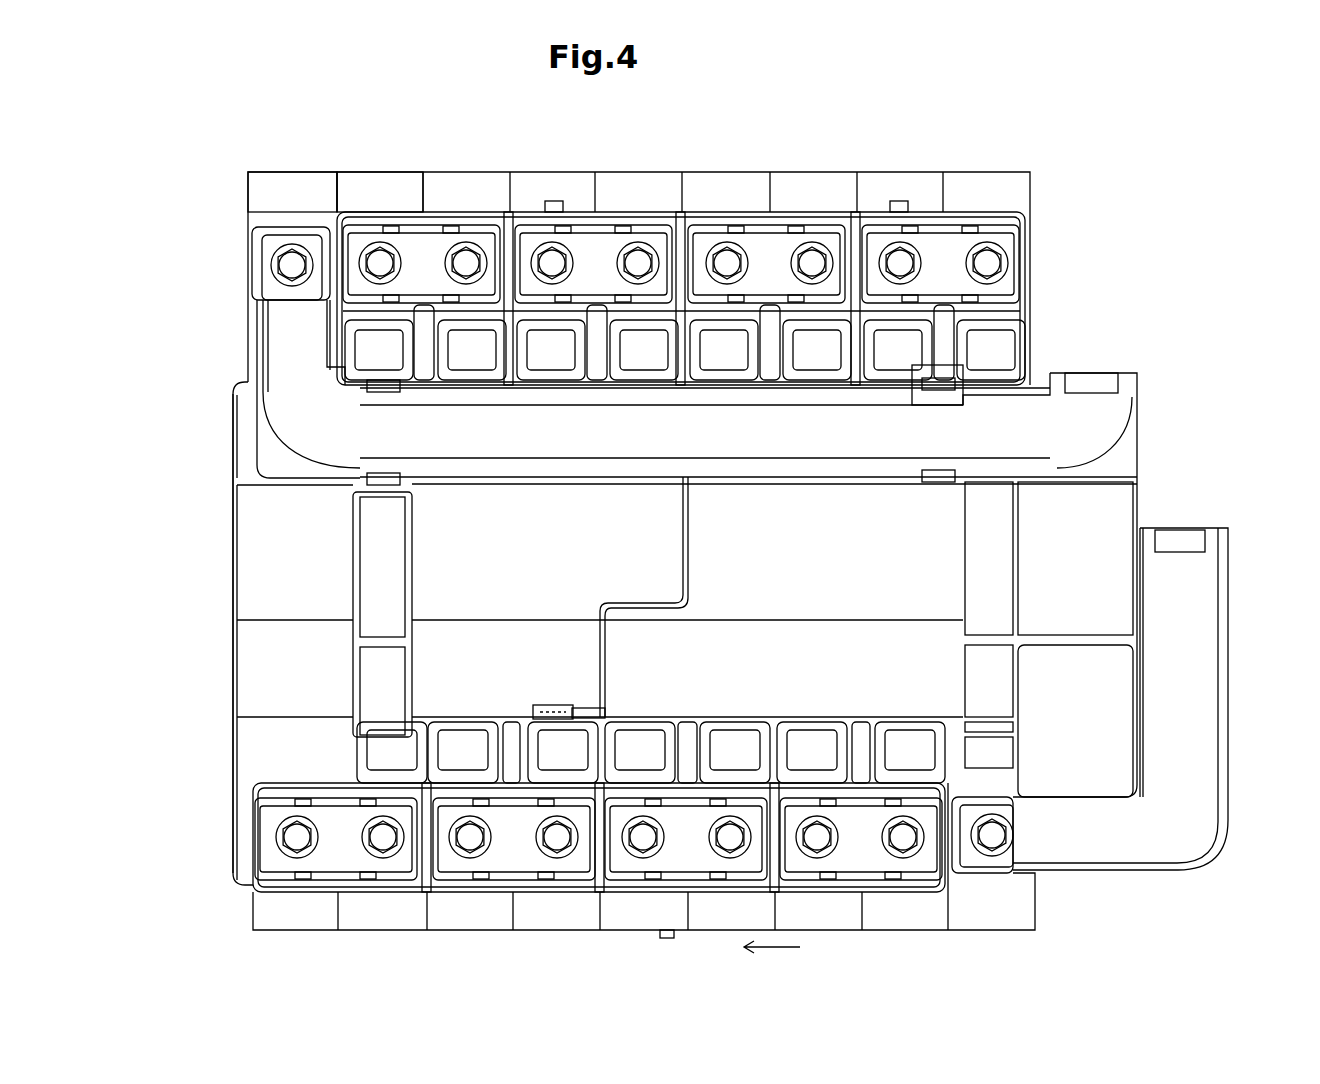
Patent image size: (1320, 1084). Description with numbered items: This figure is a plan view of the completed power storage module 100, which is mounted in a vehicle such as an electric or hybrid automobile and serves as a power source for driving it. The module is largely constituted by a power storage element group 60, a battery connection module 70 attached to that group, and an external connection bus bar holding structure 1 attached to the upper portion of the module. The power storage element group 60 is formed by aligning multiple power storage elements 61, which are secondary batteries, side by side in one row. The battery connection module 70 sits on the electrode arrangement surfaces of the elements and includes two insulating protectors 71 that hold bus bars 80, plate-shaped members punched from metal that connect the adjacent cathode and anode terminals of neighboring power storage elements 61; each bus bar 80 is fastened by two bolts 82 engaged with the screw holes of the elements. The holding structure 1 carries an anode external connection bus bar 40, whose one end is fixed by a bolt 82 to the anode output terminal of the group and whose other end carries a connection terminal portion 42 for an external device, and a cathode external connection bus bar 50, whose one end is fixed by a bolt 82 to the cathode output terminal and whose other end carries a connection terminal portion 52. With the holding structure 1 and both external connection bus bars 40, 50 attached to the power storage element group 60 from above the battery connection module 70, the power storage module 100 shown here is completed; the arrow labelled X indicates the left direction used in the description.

The external connection bus bar holding structure 1 is at (1160, 410).
The anode external connection bus bar 40 is at (280, 352).
The connection terminal portion 42 is at (1085, 372).
The cathode external connection bus bar 50 is at (1215, 690).
The connection terminal portion 52 is at (1183, 528).
The power storage element group 60 is at (838, 163).
The power storage element 61 is at (285, 172).
The battery connection module 70 is at (1054, 214).
The insulating protector 71 is at (1048, 249).
The bus bar 80 is at (775, 265).
The bolt 82 is at (292, 268).
The power storage module 100 is at (974, 962).